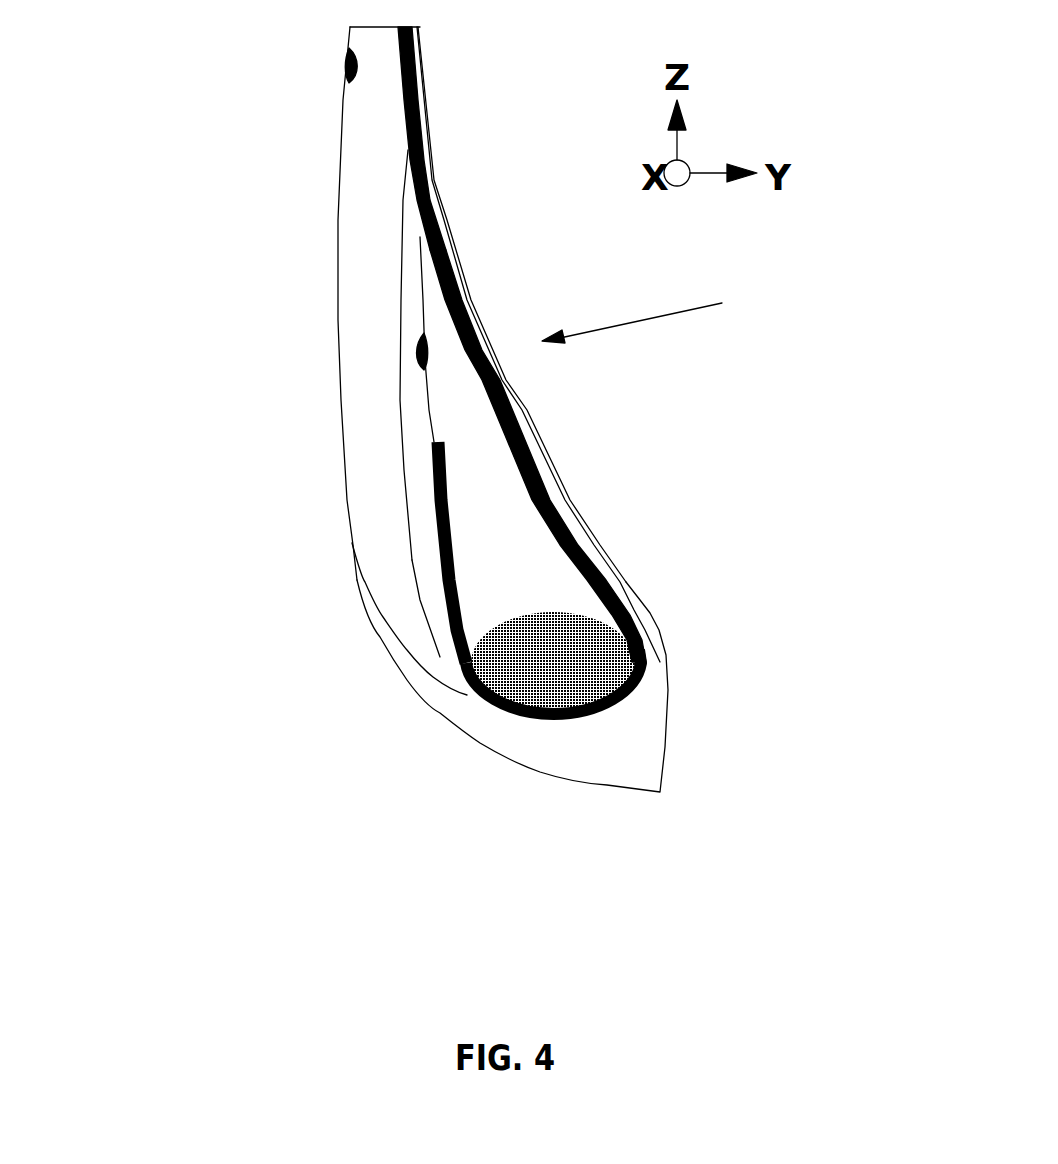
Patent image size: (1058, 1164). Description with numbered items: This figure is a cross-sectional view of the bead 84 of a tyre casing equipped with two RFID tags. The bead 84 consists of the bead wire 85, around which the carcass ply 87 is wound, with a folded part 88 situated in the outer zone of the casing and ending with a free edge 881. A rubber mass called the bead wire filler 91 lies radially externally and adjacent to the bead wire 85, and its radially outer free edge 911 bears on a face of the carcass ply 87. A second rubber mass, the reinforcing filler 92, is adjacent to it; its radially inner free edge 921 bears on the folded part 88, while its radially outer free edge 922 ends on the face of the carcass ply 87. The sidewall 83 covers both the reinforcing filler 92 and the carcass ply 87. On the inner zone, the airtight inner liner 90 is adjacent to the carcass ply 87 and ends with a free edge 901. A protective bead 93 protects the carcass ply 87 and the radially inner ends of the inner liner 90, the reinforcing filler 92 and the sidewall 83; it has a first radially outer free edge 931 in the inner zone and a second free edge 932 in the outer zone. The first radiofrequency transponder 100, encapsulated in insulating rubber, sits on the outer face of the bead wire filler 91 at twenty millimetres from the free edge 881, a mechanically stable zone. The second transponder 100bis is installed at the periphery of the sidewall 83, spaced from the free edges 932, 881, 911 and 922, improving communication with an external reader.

The sidewall 83 is at (365, 255).
The bead 84 is at (652, 314).
The bead wire 85 is at (633, 698).
The carcass ply 87 is at (520, 437).
The folded part 88 is at (440, 553).
The free edge 881 is at (436, 440).
The airtight inner liner 90 is at (565, 497).
The free edge 901 is at (647, 668).
The bead wire filler 91 is at (450, 395).
The free edge 911 is at (437, 224).
The reinforcing filler 92 is at (418, 420).
The free edge 921 is at (450, 665).
The free edge 922 is at (407, 155).
The protective bead 93 is at (638, 747).
The free edge 931 is at (622, 586).
The free edge 932 is at (352, 545).
The radiofrequency transponder 100 is at (418, 347).
The radiofrequency transponder 100bis is at (349, 70).